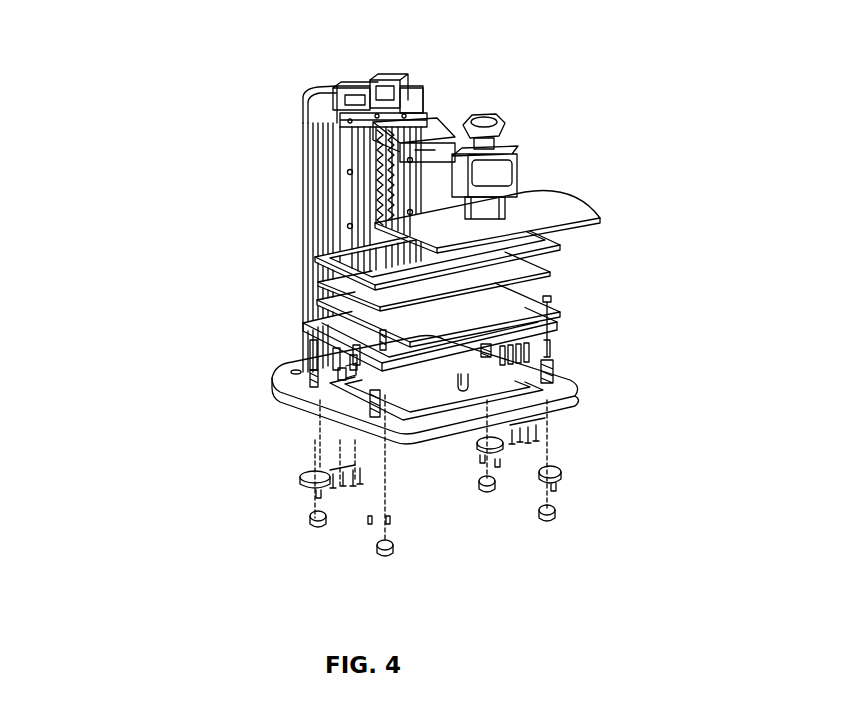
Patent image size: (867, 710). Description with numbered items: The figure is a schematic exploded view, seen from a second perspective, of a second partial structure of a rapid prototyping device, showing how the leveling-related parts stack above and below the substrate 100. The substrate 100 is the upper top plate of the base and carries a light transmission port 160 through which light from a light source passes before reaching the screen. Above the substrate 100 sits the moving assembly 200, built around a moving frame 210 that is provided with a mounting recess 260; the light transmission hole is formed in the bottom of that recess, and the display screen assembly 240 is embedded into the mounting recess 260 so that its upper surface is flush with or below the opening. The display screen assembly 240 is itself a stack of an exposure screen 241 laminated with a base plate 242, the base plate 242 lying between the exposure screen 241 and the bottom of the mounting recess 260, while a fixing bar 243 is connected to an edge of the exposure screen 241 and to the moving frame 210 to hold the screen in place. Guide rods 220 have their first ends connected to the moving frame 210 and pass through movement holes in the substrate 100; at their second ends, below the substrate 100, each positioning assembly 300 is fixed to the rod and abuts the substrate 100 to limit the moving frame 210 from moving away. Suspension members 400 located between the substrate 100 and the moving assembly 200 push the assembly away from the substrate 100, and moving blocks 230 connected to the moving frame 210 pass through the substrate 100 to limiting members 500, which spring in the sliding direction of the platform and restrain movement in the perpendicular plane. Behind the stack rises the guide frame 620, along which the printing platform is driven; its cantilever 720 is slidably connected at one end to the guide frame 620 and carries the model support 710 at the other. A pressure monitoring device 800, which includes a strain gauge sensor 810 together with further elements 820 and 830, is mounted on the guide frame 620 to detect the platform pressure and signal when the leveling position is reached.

The substrate 100 is at (537, 393).
The light transmission port 160 is at (447, 393).
The moving assembly 200 is at (117, 265).
The moving frame 210 is at (320, 331).
The guide rod 220 is at (317, 360).
The moving block 230 is at (345, 372).
The display screen assembly 240 is at (177, 233).
The exposure screen 241 is at (367, 292).
The base plate 242 is at (353, 308).
The fixing bar 243 is at (345, 265).
The mounting recess 260 is at (523, 315).
The positioning assembly 300 is at (550, 515).
The suspension member 400 is at (553, 370).
The limiting member 500 is at (527, 427).
The guide frame 620 is at (387, 95).
The model support 710 is at (550, 207).
The cantilever 720 is at (437, 120).
The pressure monitoring device 800 is at (190, 75).
The strain gauge sensor 810 is at (408, 150).
The head rail 820 is at (352, 130).
The head cap 830 is at (320, 103).